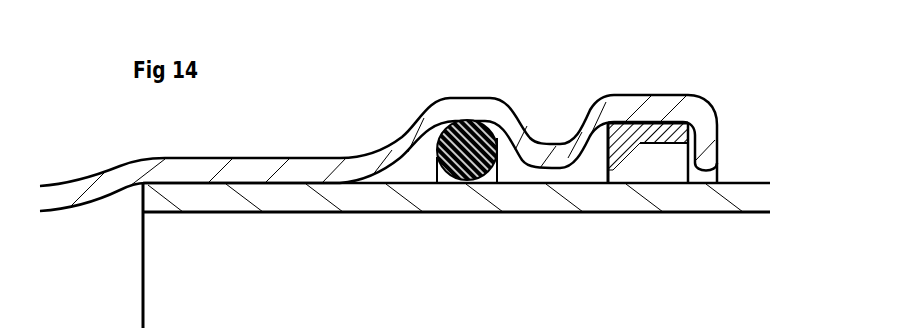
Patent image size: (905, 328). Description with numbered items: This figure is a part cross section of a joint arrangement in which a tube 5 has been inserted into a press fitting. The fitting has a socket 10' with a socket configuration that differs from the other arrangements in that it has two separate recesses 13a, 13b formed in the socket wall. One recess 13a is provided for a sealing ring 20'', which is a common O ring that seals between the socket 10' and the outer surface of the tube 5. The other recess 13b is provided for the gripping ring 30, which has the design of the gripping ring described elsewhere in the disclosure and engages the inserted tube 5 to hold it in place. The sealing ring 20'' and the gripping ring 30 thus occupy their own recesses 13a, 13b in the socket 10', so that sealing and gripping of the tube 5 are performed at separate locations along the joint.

The tube 5 is at (583, 190).
The socket 10' is at (193, 145).
The recess 13a is at (462, 113).
The recess 13b is at (687, 118).
The sealing ring 20'' is at (459, 201).
The gripping ring 30 is at (615, 143).